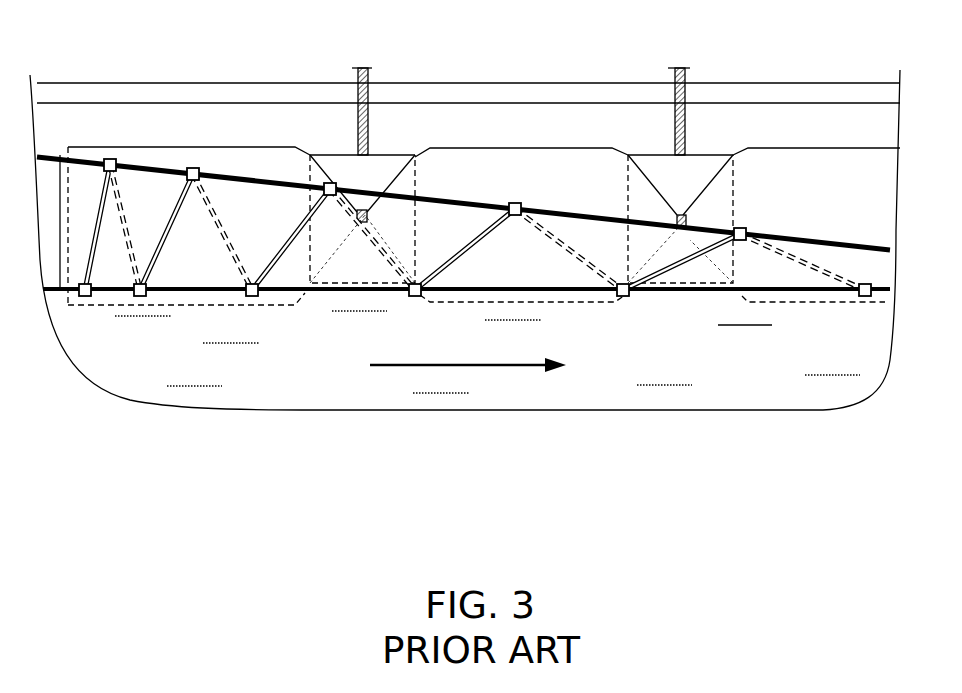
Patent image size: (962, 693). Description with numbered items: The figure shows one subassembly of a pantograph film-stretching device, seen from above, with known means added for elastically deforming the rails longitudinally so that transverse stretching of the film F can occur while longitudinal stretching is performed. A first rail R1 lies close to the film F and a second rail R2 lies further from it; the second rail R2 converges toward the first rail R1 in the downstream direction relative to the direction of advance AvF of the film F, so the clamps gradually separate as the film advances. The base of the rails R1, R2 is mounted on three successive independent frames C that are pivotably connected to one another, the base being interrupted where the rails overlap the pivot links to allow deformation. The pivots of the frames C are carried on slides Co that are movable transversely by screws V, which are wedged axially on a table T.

The table T is at (872, 83).
The frame C is at (203, 147).
The slide Co is at (390, 155).
The screw V is at (358, 70).
The first rail R1 is at (60, 155).
The second rail R2 is at (832, 250).
The film F is at (767, 378).
The direction of advance of the film AvF is at (385, 367).